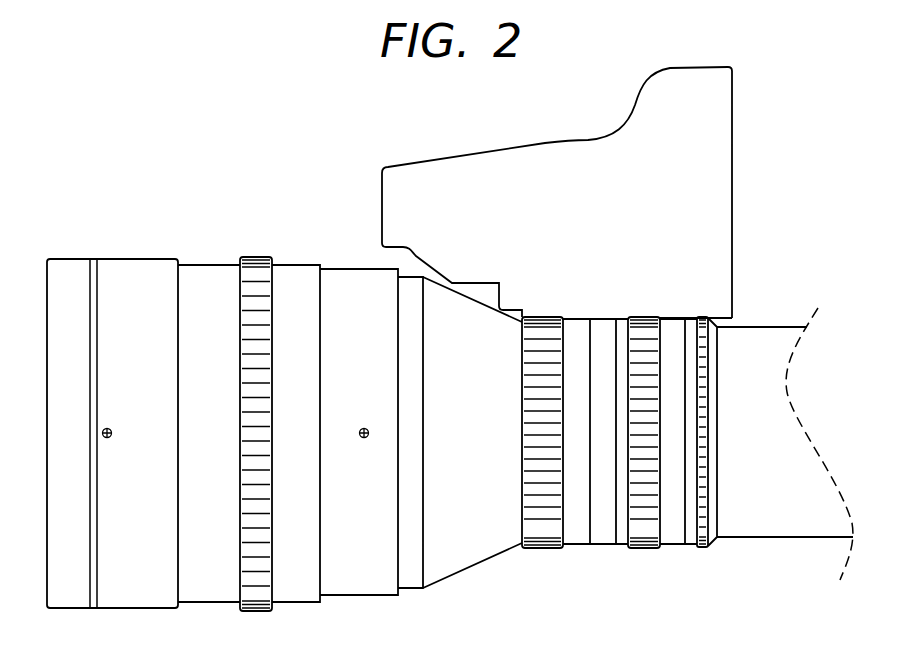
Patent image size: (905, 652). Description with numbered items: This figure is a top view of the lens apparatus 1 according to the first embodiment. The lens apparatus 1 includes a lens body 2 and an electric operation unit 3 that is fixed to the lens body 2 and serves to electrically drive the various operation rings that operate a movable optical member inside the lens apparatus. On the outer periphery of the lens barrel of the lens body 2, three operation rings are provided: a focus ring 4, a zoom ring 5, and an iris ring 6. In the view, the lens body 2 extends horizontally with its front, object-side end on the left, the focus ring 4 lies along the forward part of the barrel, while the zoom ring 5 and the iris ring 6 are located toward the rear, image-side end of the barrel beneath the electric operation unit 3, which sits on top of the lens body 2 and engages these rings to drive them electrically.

The lens apparatus 1 is at (294, 144).
The lens body 2 is at (137, 280).
The electric operation unit 3 is at (465, 177).
The focus ring 4 is at (357, 283).
The zoom ring 5 is at (642, 320).
The iris ring 6 is at (706, 320).